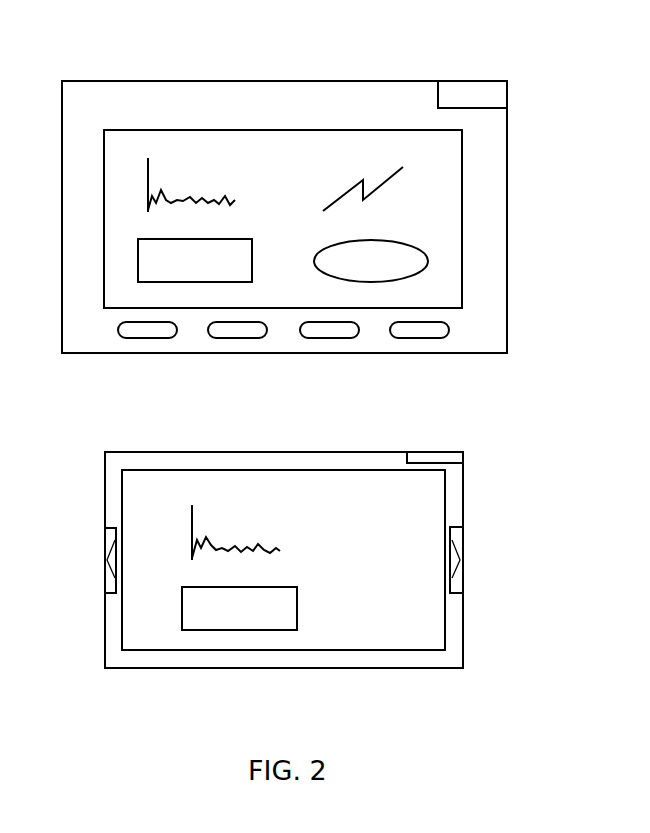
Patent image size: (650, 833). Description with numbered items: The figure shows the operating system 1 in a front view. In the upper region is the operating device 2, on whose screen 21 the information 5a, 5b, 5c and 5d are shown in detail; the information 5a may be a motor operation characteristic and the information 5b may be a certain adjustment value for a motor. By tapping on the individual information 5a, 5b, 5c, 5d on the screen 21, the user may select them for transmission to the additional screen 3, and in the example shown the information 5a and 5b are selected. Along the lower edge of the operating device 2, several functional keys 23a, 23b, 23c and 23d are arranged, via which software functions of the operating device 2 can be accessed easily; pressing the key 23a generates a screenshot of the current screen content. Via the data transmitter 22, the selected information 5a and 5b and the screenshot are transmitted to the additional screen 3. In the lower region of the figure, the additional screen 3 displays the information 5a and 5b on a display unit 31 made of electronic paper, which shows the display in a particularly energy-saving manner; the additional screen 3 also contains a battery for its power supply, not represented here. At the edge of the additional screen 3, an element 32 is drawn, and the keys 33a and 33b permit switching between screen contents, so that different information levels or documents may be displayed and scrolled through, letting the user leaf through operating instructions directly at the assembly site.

The operating system 1 is at (86, 724).
The operating device 2 is at (86, 53).
The additional screen 3 is at (461, 675).
The information 5a is at (165, 188).
The information 5b is at (138, 261).
The information 5c is at (343, 196).
The information 5d is at (428, 262).
The screen 21 is at (442, 184).
The data transmitter 22 is at (505, 97).
The functional key 23a is at (147, 336).
The functional key 23b is at (236, 336).
The functional key 23c is at (327, 336).
The functional key 23d is at (417, 336).
The display unit 31 is at (430, 492).
The indicator area of remote device 32 is at (438, 455).
The key 33a is at (105, 585).
The key 33b is at (458, 575).